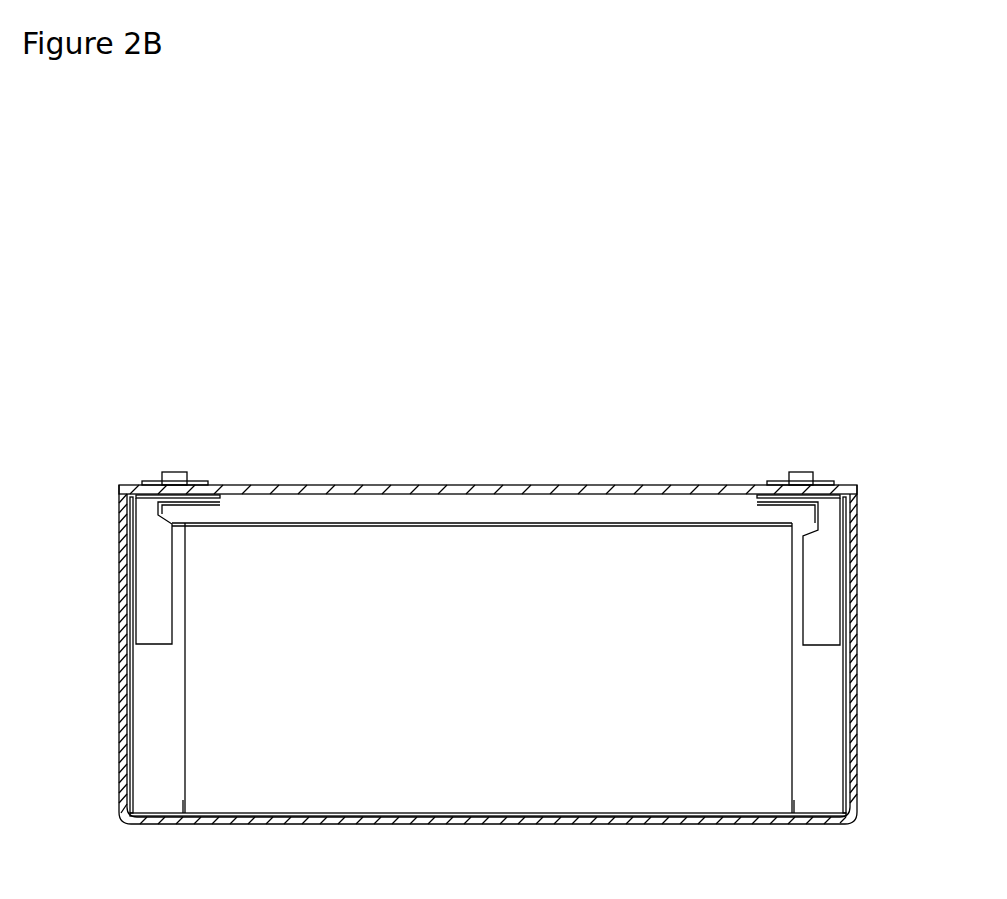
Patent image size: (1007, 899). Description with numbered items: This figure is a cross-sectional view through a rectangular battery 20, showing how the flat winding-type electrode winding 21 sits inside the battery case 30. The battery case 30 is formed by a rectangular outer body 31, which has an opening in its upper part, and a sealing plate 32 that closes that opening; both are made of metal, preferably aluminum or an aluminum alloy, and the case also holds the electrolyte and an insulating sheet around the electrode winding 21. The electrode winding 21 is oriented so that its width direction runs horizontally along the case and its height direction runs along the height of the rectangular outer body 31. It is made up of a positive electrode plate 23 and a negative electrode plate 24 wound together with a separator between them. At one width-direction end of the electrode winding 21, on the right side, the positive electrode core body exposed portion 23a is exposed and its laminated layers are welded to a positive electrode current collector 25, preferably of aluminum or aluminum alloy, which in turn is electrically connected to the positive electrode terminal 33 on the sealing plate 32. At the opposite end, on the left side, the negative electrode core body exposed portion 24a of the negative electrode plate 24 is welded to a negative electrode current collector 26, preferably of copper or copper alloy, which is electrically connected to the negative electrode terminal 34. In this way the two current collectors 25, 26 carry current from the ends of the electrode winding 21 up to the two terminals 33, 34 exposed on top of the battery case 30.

The rectangular battery 20 is at (506, 464).
The electrode winding 21 is at (500, 785).
The positive electrode plate 23 is at (823, 750).
The positive electrode core body exposed portion 23a is at (815, 798).
The negative electrode plate 24 is at (152, 683).
The negative electrode core body exposed portion 24a is at (155, 798).
The positive electrode current collector 25 is at (825, 570).
The negative electrode current collector 26 is at (152, 568).
The battery case 30 is at (858, 705).
The rectangular outer body 31 is at (857, 653).
The sealing plate 32 is at (846, 485).
The positive electrode terminal 33 is at (800, 472).
The negative electrode terminal 34 is at (174, 472).